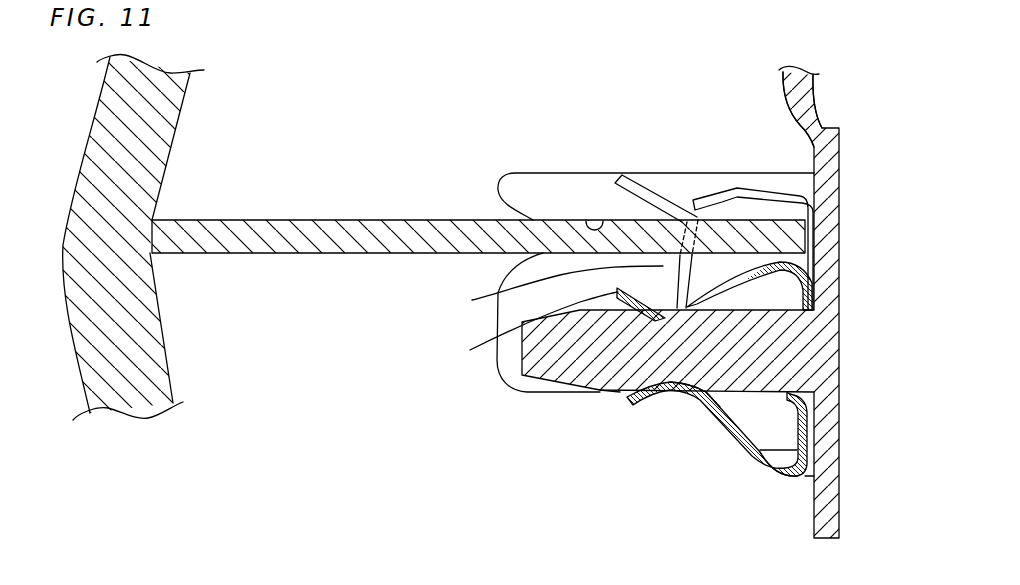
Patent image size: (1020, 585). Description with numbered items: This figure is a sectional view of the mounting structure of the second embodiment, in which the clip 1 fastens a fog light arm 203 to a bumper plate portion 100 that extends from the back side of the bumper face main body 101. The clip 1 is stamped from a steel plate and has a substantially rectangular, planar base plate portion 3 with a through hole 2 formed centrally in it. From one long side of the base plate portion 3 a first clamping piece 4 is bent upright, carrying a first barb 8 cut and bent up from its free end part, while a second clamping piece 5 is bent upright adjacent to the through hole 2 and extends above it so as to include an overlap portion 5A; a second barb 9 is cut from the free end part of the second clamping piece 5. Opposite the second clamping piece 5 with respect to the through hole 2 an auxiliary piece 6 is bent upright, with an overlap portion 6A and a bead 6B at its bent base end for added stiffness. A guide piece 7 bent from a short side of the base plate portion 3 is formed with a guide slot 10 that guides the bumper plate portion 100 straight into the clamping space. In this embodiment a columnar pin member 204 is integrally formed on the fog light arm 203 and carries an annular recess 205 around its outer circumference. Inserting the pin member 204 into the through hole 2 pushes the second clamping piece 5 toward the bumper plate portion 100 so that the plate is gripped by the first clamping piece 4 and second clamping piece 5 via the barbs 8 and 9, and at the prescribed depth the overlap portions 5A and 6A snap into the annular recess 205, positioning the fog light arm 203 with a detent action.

The clip 1 is at (568, 100).
The through hole 2 is at (746, 441).
The base plate portion 3 is at (793, 473).
The first clamping piece 4 is at (738, 189).
The second clamping piece 5 is at (631, 317).
The overlap portion 5A is at (655, 316).
The auxiliary piece 6 is at (717, 399).
The overlap portion 6A is at (687, 398).
The bead 6B is at (766, 479).
The guide piece 7 is at (530, 178).
The first barb 8 is at (692, 210).
The second barb 9 is at (556, 292).
The guide slot 10 is at (586, 222).
The bumper plate portion 100 is at (293, 219).
The bumper face main body 101 is at (158, 123).
The fog light arm 203 is at (786, 96).
The pin member 204 is at (536, 382).
The annular recess 205 is at (618, 352).